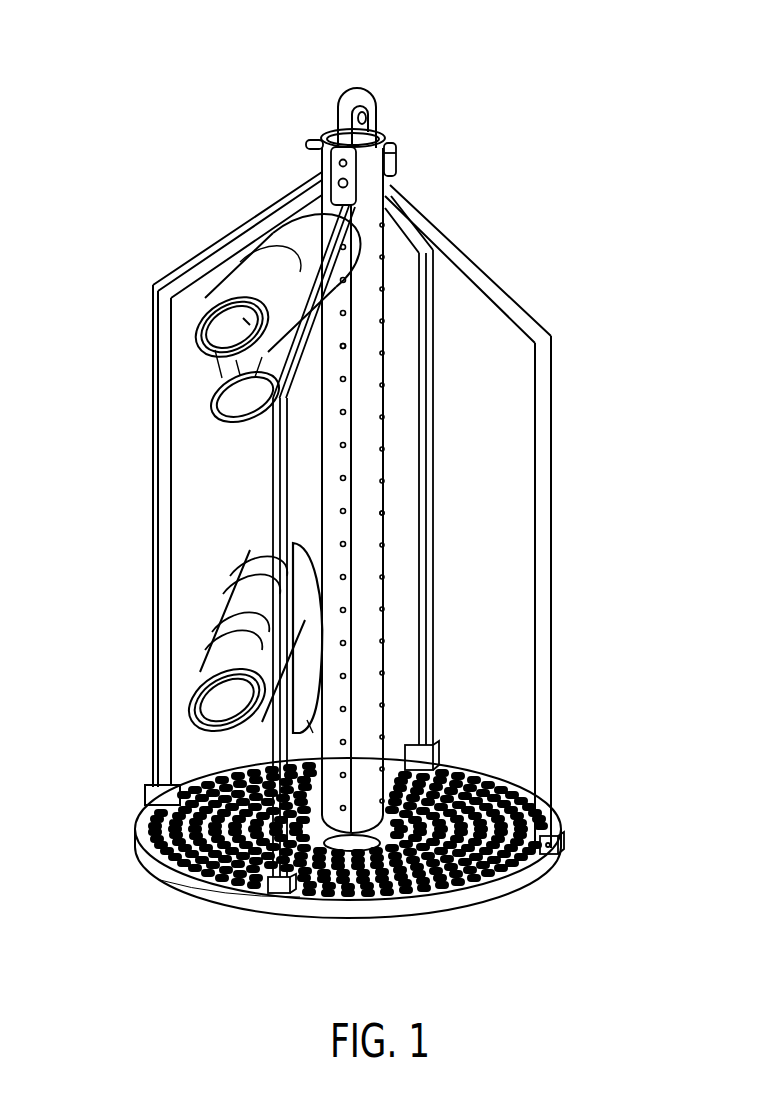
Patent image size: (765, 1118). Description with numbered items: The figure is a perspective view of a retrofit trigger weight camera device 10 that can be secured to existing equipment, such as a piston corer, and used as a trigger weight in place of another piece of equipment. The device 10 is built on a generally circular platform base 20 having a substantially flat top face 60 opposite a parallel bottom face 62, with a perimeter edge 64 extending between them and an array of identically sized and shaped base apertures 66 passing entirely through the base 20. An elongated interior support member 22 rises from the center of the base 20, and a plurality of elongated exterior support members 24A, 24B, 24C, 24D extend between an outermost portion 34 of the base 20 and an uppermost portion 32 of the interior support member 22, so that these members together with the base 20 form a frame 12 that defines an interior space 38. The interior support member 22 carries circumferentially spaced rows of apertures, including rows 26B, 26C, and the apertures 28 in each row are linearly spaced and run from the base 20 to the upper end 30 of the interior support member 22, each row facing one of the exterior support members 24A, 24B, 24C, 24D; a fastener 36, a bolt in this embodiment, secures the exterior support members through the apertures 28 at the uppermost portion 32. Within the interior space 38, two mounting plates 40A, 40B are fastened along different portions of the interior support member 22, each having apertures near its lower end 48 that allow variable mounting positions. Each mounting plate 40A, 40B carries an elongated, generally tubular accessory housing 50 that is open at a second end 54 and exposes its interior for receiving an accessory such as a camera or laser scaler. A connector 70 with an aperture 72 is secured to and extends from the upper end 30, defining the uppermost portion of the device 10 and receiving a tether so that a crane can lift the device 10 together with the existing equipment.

The retrofit trigger weight camera device 10 is at (128, 108).
The frame 12 is at (550, 468).
The platform base 20 is at (480, 905).
The interior support member 22 is at (385, 640).
The exterior support member 24A is at (440, 421).
The exterior support member 24B is at (552, 548).
The exterior support member 24C is at (340, 512).
The exterior support member 24D is at (165, 452).
The row of apertures 26B is at (385, 512).
The row of apertures 26C is at (358, 352).
The apertures 28 is at (340, 480).
The upper end of the interior support member 30 is at (388, 140).
The uppermost portion of the interior support member 32 is at (397, 160).
The outermost portion of the base 34 is at (322, 894).
The fastener 36 is at (312, 148).
The interior space 38 is at (197, 603).
The mounting plate 40A is at (315, 335).
The mounting plate 40B is at (196, 673).
The lower end of the mounting plate 48 is at (275, 893).
The accessory housing 50 is at (206, 421).
The second end of the accessory housing 54 is at (262, 585).
The top face of the base 60 is at (400, 892).
The bottom face of the base 62 is at (453, 918).
The perimeter edge of the base 64 is at (232, 900).
The base apertures 66 is at (525, 840).
The connector 70 is at (365, 80).
The aperture of the connector 72 is at (370, 118).